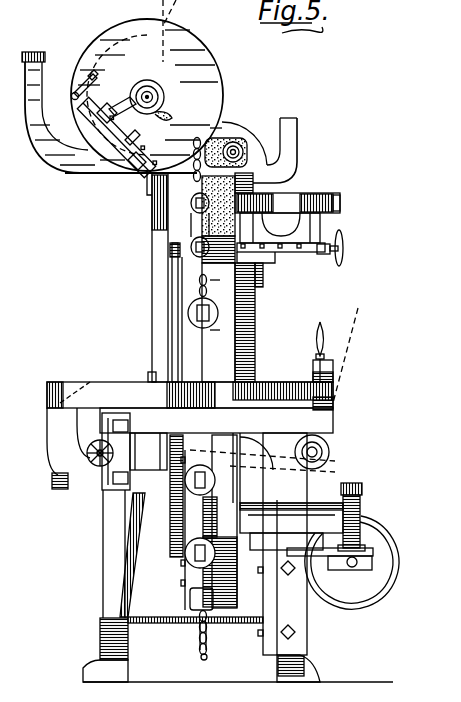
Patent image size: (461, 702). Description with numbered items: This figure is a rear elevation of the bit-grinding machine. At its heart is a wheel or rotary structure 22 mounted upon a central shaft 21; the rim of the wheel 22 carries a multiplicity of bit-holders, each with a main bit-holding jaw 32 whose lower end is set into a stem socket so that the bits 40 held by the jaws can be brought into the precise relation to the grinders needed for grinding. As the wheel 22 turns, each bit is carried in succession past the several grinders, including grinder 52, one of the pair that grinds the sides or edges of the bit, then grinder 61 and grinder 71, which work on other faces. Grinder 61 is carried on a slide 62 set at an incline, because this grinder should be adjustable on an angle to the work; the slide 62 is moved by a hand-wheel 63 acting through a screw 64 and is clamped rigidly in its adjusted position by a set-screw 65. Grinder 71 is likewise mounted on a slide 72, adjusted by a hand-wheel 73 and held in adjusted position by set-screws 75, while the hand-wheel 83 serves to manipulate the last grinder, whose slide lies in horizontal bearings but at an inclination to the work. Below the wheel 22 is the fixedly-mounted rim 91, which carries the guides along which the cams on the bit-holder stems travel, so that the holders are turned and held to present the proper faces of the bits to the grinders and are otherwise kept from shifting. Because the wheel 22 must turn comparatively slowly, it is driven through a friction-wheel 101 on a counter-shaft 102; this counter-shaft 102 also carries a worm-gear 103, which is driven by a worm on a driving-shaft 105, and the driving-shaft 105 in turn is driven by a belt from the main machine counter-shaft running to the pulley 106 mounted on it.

The central shaft 21 is at (335, 403).
The wheel or rotary structure 22 is at (227, 328).
The main bit-holding jaw 32 is at (199, 643).
The bits 40 is at (204, 654).
The grinder 52 is at (220, 140).
The grinder 61 is at (165, 115).
The slide 62 is at (115, 160).
The hand-wheel 63 is at (75, 87).
The screw 64 is at (105, 108).
The set-screw 65 is at (126, 155).
The grinder 71 is at (197, 204).
The slide 72 is at (308, 228).
The hand-wheel 73 is at (343, 262).
The set-screws 75 is at (299, 249).
The hand-wheel 83 is at (88, 457).
The fixedly-mounted rim 91 is at (172, 306).
The friction-wheel 101 is at (228, 517).
The counter-shaft 102 is at (362, 520).
The worm-gear 103 is at (358, 488).
The driving-shaft 105 is at (356, 569).
The pulley 106 is at (338, 604).